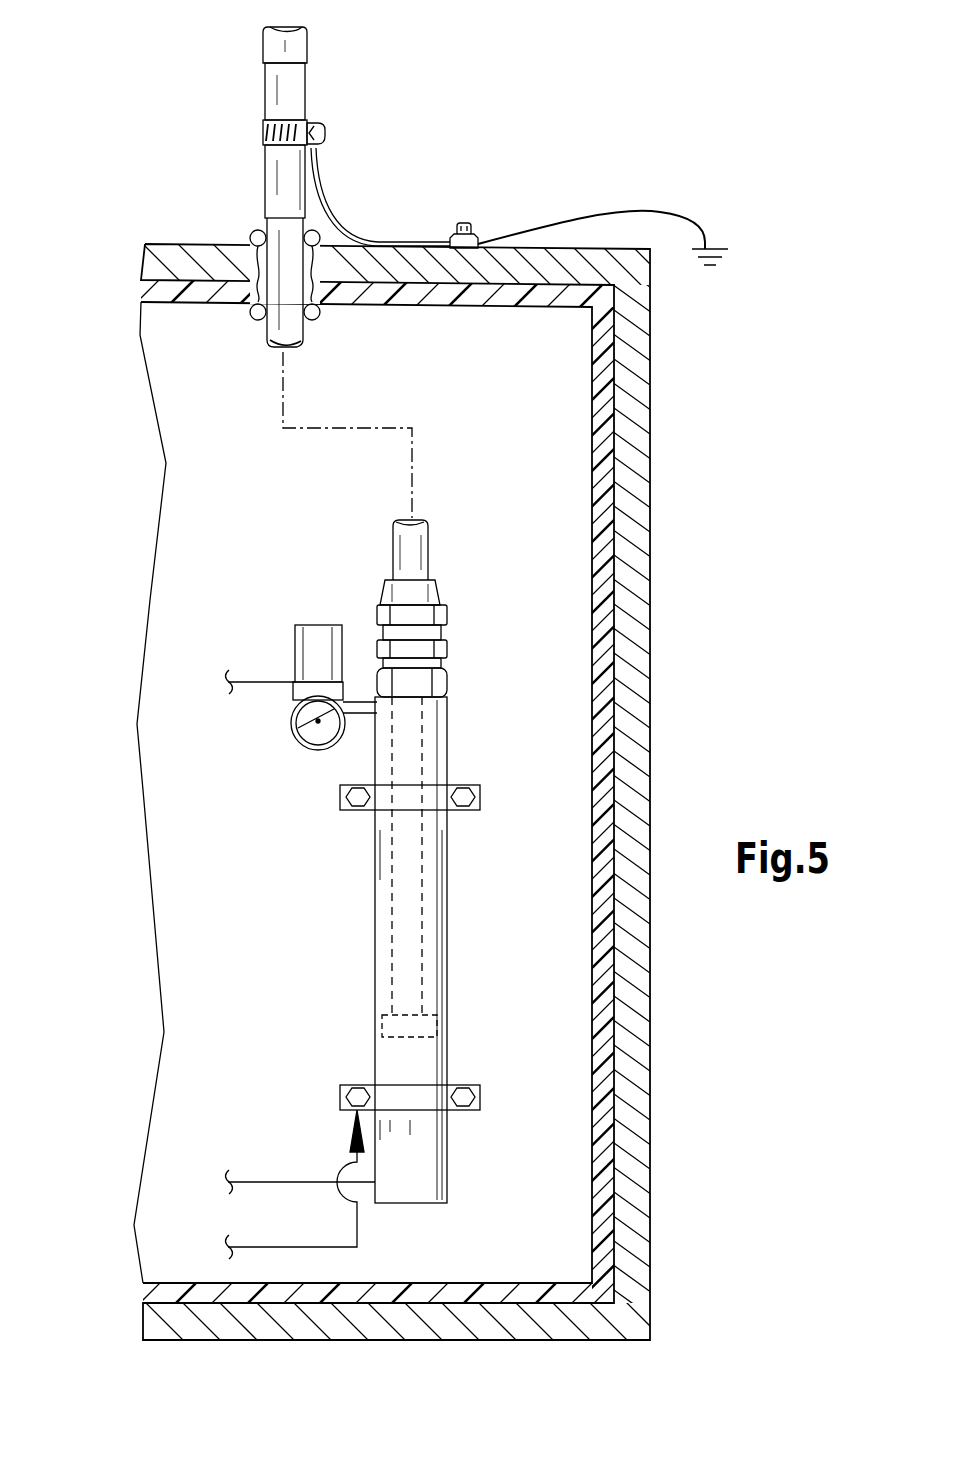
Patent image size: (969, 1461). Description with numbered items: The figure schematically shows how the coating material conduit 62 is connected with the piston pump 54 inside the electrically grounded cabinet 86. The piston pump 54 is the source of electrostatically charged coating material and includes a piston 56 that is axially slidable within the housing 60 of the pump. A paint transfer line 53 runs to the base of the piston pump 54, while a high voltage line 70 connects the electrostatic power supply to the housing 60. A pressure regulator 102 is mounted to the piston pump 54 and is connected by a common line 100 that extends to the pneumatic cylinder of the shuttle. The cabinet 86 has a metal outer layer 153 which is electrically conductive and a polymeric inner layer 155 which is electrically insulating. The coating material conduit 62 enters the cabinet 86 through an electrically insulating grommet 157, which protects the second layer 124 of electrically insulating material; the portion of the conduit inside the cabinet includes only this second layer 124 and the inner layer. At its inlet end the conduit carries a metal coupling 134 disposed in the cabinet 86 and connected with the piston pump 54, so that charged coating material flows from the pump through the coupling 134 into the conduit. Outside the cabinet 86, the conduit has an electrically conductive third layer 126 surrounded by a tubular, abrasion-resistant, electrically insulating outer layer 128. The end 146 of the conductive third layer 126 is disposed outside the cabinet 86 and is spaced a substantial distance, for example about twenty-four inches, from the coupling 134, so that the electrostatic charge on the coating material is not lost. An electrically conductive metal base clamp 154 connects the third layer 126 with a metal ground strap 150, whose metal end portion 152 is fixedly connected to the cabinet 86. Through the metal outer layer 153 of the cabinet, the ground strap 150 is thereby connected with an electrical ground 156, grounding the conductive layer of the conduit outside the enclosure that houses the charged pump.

The paint transfer line 53 is at (272, 1182).
The piston pump 54 is at (397, 950).
The piston 56 is at (400, 933).
The housing 60 is at (447, 1063).
The coating material conduit 62 is at (286, 109).
The high voltage line 70 is at (287, 1247).
The cabinet 86 is at (461, 792).
The common line 100 is at (264, 680).
The pressure regulator 102 is at (318, 625).
The second layer 124 is at (277, 322).
The third layer 126 is at (280, 180).
The outer layer 128 is at (275, 43).
The coupling 134 is at (440, 688).
The end 146 is at (265, 230).
The ground strap 150 is at (330, 217).
The metal end portion 152 is at (478, 240).
The metal outer layer 153 is at (633, 378).
The base clamp 154 is at (318, 122).
The polymeric inner layer 155 is at (603, 400).
The electrical ground 156 is at (768, 238).
The grommet 157 is at (250, 312).